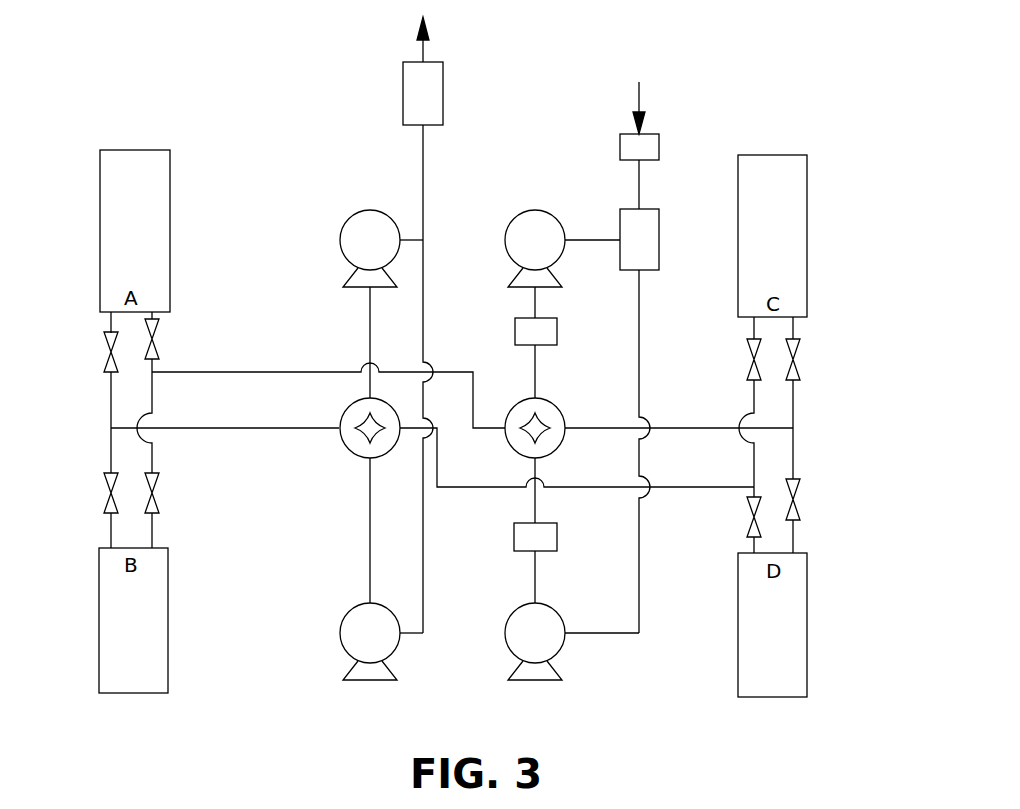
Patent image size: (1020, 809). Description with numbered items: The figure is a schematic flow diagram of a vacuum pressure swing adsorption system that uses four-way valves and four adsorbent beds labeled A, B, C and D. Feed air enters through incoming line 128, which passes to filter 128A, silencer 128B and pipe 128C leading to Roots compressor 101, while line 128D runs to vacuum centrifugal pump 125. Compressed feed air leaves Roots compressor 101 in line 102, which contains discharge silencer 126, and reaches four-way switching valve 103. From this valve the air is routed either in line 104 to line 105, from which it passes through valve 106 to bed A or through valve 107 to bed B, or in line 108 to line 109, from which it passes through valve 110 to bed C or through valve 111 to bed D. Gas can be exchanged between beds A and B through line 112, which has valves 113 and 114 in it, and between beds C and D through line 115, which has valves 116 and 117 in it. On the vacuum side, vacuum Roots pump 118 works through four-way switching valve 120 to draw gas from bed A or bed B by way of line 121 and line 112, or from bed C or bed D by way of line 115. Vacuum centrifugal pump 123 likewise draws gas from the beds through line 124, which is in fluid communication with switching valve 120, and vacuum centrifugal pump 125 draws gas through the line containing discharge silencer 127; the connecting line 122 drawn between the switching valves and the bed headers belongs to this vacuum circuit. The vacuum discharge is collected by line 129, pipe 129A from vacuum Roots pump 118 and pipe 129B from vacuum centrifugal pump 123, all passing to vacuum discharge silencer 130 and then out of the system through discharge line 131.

The Roots compressor 101 is at (537, 208).
The line 102 is at (537, 305).
The four-way switching valve 103 is at (553, 406).
The line 104 is at (213, 371).
The line 105 is at (154, 410).
The valve 106 is at (155, 350).
The valve 107 is at (155, 500).
The line 108 is at (685, 428).
The line 109 is at (797, 418).
The valve 110 is at (797, 360).
The valve 111 is at (797, 512).
The line 112 is at (110, 416).
The valve 113 is at (110, 362).
The valve 114 is at (110, 492).
The line 115 is at (752, 470).
The valve 116 is at (753, 363).
The valve 117 is at (750, 526).
The vacuum Roots pump 118 is at (347, 222).
The four-way switching valve 120 is at (345, 418).
The line 121 is at (245, 430).
The conduit 122 is at (488, 492).
The vacuum centrifugal pump 123 is at (340, 650).
The line 124 is at (368, 538).
The vacuum centrifugal pump 125 is at (560, 650).
The discharge silencer 126 is at (515, 330).
The discharge silencer 127 is at (558, 537).
The incoming line 128 is at (639, 96).
The filter 128A is at (660, 137).
The silencer 128B is at (660, 234).
The pipe 128C is at (593, 240).
The line 128D is at (641, 330).
The line 129 is at (425, 590).
The pipe 129A is at (418, 235).
The pipe 129B is at (408, 637).
The vacuum discharge silencer 130 is at (443, 95).
The discharge line 131 is at (428, 45).